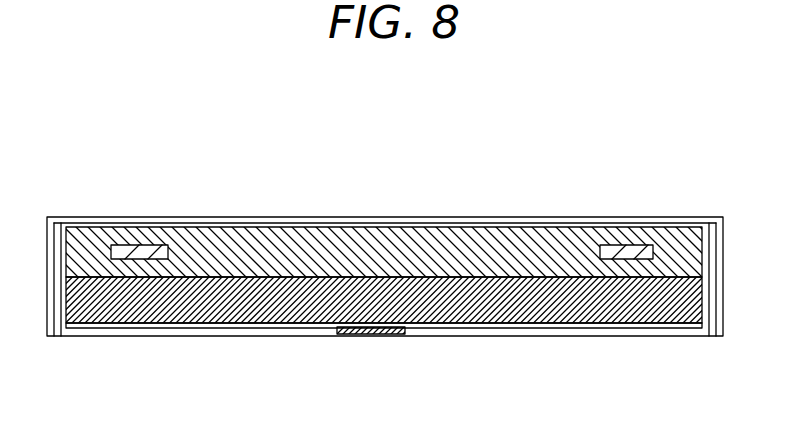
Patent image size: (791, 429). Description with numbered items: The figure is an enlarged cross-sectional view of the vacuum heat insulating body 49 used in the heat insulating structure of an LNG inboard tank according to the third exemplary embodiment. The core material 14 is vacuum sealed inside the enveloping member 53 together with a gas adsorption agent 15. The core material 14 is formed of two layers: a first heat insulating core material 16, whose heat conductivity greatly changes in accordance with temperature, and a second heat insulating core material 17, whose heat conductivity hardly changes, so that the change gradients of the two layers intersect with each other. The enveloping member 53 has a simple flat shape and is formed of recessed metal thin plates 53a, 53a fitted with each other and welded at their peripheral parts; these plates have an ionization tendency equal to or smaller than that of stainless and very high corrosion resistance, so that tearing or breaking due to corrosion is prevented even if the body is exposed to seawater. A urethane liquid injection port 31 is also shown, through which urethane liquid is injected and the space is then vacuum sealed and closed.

The vacuum heat insulating body 49 is at (458, 200).
The enveloping member 53 is at (385, 275).
The recessed metal thin plate 53a is at (543, 222).
The core material 14 is at (383, 275).
The first heat insulating core material 16 is at (292, 248).
The second heat insulating core material 17 is at (283, 308).
The gas adsorption agent 15 is at (641, 250).
The urethane liquid injection port 31 is at (377, 334).